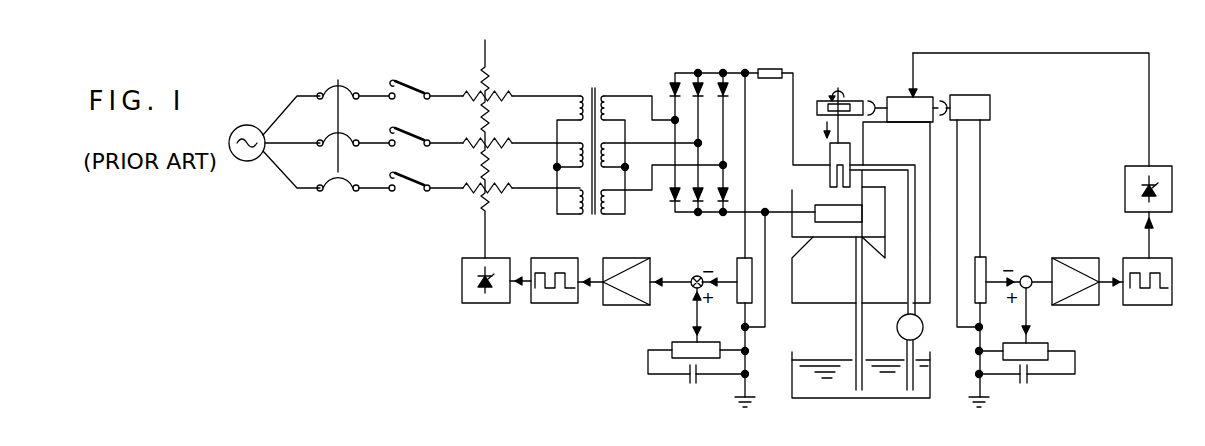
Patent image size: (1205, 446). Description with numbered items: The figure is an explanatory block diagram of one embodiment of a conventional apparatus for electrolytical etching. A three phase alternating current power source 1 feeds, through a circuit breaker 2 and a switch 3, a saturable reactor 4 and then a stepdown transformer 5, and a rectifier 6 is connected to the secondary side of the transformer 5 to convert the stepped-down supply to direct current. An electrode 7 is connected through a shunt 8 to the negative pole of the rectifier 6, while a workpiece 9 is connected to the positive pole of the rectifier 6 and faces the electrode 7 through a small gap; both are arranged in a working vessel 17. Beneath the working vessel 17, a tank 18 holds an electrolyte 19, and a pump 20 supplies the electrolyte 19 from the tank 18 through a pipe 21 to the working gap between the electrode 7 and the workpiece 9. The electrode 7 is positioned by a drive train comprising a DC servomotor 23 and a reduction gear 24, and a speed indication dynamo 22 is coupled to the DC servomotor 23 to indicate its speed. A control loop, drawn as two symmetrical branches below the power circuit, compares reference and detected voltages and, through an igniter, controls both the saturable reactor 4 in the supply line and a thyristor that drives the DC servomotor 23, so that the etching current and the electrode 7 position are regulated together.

The three phase alternating current power source 1 is at (244, 125).
The circuit breaker 2 is at (339, 81).
The switch 3 is at (399, 80).
The saturable reactor 4 is at (488, 90).
The stepdown transformer 5 is at (593, 89).
The rectifier 6 is at (710, 73).
The electrode 7 is at (830, 158).
The shunt 8 is at (764, 69).
The workpiece 9 is at (825, 205).
The working vessel 17 is at (792, 196).
The tank 18 is at (836, 399).
The electrolyte 19 is at (818, 360).
The pump 20 is at (917, 318).
The pipe 21 is at (888, 170).
The speed indication dynamo 22 is at (990, 105).
The DC servomotor 23 is at (915, 97).
The reduction gear 24 is at (846, 98).